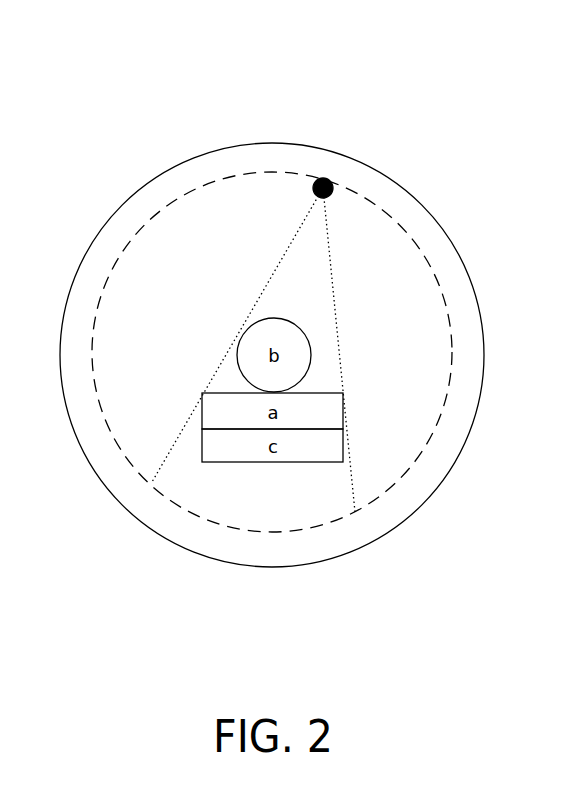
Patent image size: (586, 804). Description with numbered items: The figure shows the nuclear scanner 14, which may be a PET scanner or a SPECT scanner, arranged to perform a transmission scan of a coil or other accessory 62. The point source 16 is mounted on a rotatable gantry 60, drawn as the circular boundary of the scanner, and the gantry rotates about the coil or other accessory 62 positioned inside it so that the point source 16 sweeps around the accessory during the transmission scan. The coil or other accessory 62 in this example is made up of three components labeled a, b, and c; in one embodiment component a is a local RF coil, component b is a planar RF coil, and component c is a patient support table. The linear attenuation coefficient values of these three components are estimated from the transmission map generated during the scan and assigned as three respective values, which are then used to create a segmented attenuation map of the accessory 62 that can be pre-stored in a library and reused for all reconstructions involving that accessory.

The nuclear scanner 14 is at (371, 89).
The point source 16 is at (328, 180).
The rotatable gantry 60 is at (118, 208).
The coil or other accessory 62 is at (325, 362).